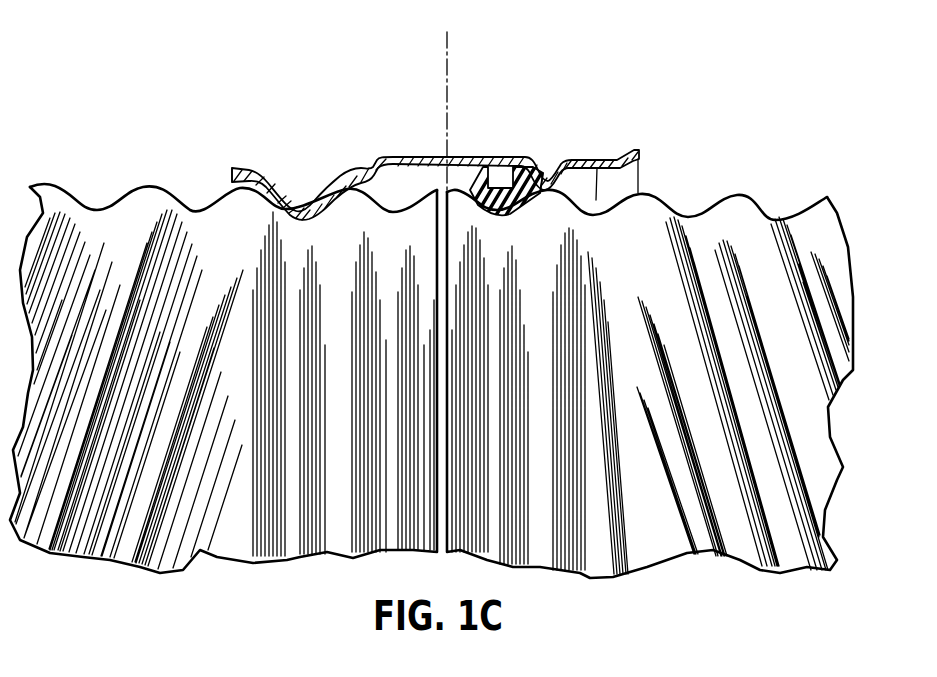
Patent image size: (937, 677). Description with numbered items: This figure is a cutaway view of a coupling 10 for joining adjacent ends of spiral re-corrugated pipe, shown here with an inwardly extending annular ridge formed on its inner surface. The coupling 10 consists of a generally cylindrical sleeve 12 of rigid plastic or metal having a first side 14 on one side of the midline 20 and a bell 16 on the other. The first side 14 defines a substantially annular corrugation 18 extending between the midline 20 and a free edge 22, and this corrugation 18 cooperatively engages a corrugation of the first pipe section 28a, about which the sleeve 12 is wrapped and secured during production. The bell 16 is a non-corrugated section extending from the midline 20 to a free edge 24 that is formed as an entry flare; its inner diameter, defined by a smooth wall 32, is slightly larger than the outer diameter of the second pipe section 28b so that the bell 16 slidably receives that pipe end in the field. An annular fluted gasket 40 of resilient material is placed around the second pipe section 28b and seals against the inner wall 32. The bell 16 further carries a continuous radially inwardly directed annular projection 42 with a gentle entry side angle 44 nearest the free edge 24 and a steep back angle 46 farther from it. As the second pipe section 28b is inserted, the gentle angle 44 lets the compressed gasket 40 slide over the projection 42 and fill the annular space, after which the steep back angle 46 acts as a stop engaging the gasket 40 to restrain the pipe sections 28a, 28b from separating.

The coupling 10 is at (431, 133).
The sleeve 12 is at (467, 156).
The first side 14 is at (340, 132).
The bell 16 is at (526, 96).
The annular corrugation 18 is at (296, 205).
The midline 20 is at (448, 84).
The free edge 22 is at (232, 168).
The free edge 24 is at (640, 150).
The first pipe section 28a is at (288, 567).
The second pipe section 28b is at (587, 580).
The smooth wall 32 is at (597, 170).
The fluted gasket 40 is at (500, 212).
The annular projection 42 is at (541, 168).
The gentle entry side angle 44 is at (592, 160).
The steep back angle 46 is at (523, 190).